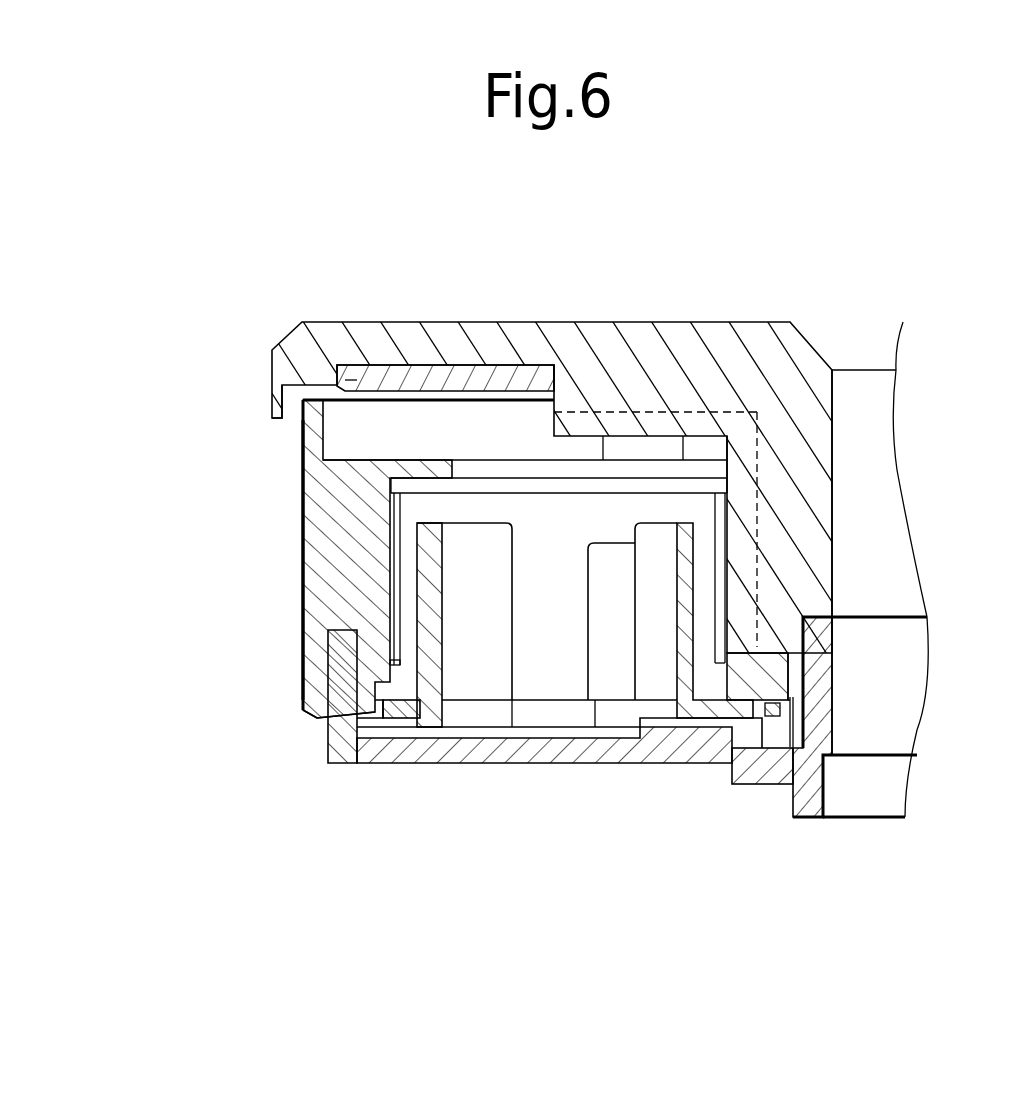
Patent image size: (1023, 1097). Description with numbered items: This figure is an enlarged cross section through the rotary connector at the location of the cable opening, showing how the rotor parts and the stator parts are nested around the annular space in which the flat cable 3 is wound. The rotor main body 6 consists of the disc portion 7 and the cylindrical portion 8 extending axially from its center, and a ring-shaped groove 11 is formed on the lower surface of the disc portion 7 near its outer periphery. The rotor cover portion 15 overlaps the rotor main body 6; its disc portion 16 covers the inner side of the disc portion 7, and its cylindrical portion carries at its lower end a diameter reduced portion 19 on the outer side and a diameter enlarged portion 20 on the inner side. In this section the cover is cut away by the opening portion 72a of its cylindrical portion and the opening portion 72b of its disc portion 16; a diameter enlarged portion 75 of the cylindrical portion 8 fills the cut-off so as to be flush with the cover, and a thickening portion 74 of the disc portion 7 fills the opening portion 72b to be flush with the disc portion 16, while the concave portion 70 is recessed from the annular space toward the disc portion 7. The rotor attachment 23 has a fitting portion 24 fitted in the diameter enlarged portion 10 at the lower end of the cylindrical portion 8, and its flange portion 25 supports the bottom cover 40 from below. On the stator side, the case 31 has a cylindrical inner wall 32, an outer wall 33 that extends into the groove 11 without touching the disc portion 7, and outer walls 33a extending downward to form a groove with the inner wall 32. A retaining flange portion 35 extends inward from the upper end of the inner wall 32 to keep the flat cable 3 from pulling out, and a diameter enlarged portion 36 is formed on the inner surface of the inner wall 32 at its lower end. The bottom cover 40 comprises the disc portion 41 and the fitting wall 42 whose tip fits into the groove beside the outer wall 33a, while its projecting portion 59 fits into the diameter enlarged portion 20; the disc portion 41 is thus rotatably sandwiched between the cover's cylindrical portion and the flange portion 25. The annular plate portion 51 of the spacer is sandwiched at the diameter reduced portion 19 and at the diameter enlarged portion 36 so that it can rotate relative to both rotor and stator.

The flat cable 3 is at (392, 579).
The rotor main body 6 is at (423, 250).
The disc portion 7 is at (468, 337).
The cylindrical portion 8 is at (785, 525).
The diameter enlarged portion 10 is at (805, 682).
The groove 11 is at (273, 403).
The rotor cover portion 15 is at (762, 647).
The disc portion 16 is at (375, 378).
The diameter reduced portion 19 is at (708, 720).
The diameter enlarged portion 20 is at (793, 710).
The rotor attachment 23 is at (865, 820).
The fitting portion 24 is at (832, 647).
The flange portion 25 is at (762, 786).
The case 31 is at (221, 560).
The inner wall 32 is at (400, 627).
The outer wall 33 is at (317, 508).
The outer wall 33a is at (303, 707).
The retaining flange portion 35 is at (425, 470).
The diameter enlarged portion 36 is at (372, 712).
The bottom cover 40 is at (490, 742).
The disc portion 41 is at (549, 732).
The fitting wall 42 is at (335, 650).
The annular plate portion 51 is at (400, 717).
The projecting portion 59 is at (800, 715).
The concave portion 70 is at (355, 380).
The opening portion 72a is at (775, 625).
The opening portion 72b is at (558, 377).
The thickening portion 74 is at (612, 425).
The diameter enlarged portion 75 is at (733, 590).